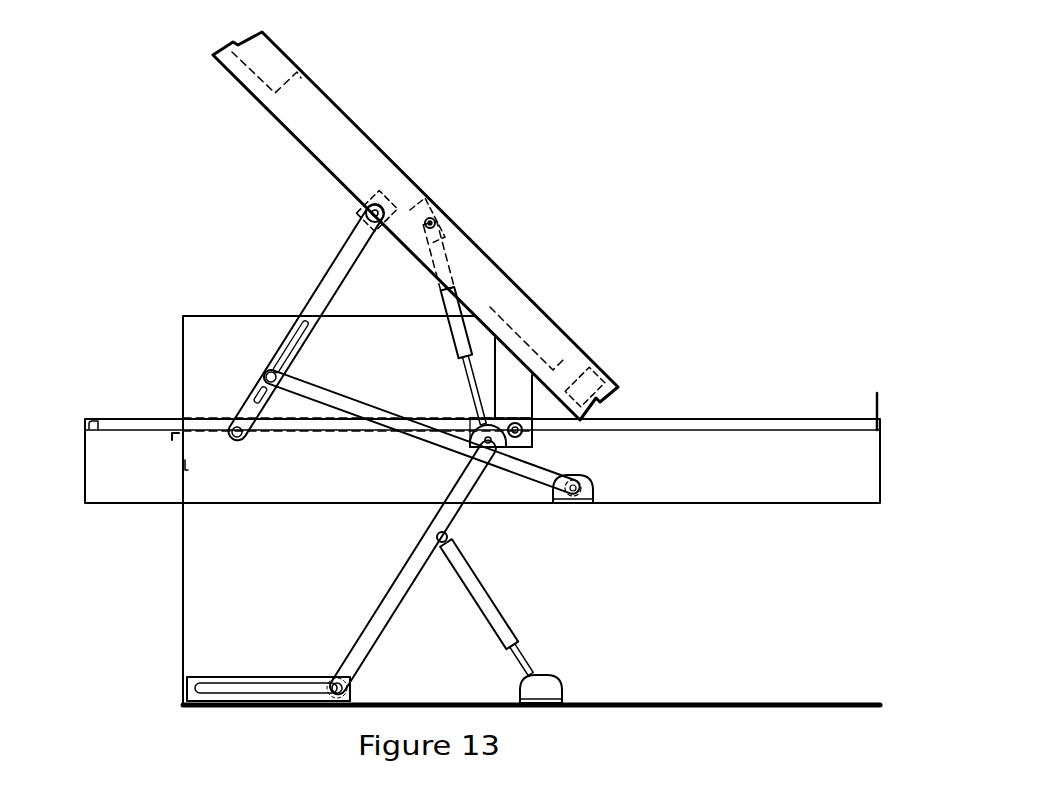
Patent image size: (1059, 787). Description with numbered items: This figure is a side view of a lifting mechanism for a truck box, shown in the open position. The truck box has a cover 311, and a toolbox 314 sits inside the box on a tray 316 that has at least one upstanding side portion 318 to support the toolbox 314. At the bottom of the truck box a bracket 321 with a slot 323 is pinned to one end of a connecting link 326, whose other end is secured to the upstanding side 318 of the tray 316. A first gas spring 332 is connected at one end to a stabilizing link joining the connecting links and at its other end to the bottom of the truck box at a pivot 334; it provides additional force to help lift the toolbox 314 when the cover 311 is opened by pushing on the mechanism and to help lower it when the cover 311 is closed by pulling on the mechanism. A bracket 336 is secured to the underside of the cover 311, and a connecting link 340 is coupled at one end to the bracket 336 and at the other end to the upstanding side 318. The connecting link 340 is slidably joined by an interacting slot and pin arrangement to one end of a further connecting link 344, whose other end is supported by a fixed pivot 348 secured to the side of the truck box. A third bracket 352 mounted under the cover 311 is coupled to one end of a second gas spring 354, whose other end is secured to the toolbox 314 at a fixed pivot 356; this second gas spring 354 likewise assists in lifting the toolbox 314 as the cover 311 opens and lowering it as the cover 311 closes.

The cover 311 is at (483, 252).
The toolbox 314 is at (183, 352).
The tray 316 is at (340, 480).
The upstanding side portion 318 is at (482, 464).
The bracket 321 is at (193, 693).
The slot 323 is at (220, 684).
The connecting link 326 is at (372, 628).
The first gas spring 332 is at (497, 617).
The pivot 334 is at (548, 690).
The bracket 336 is at (368, 210).
The connecting link 340 is at (320, 283).
The connecting link 344 is at (340, 401).
The fixed pivot 348 is at (598, 490).
The third bracket 352 is at (427, 203).
The second gas spring 354 is at (510, 313).
The fixed pivot 356 is at (535, 428).